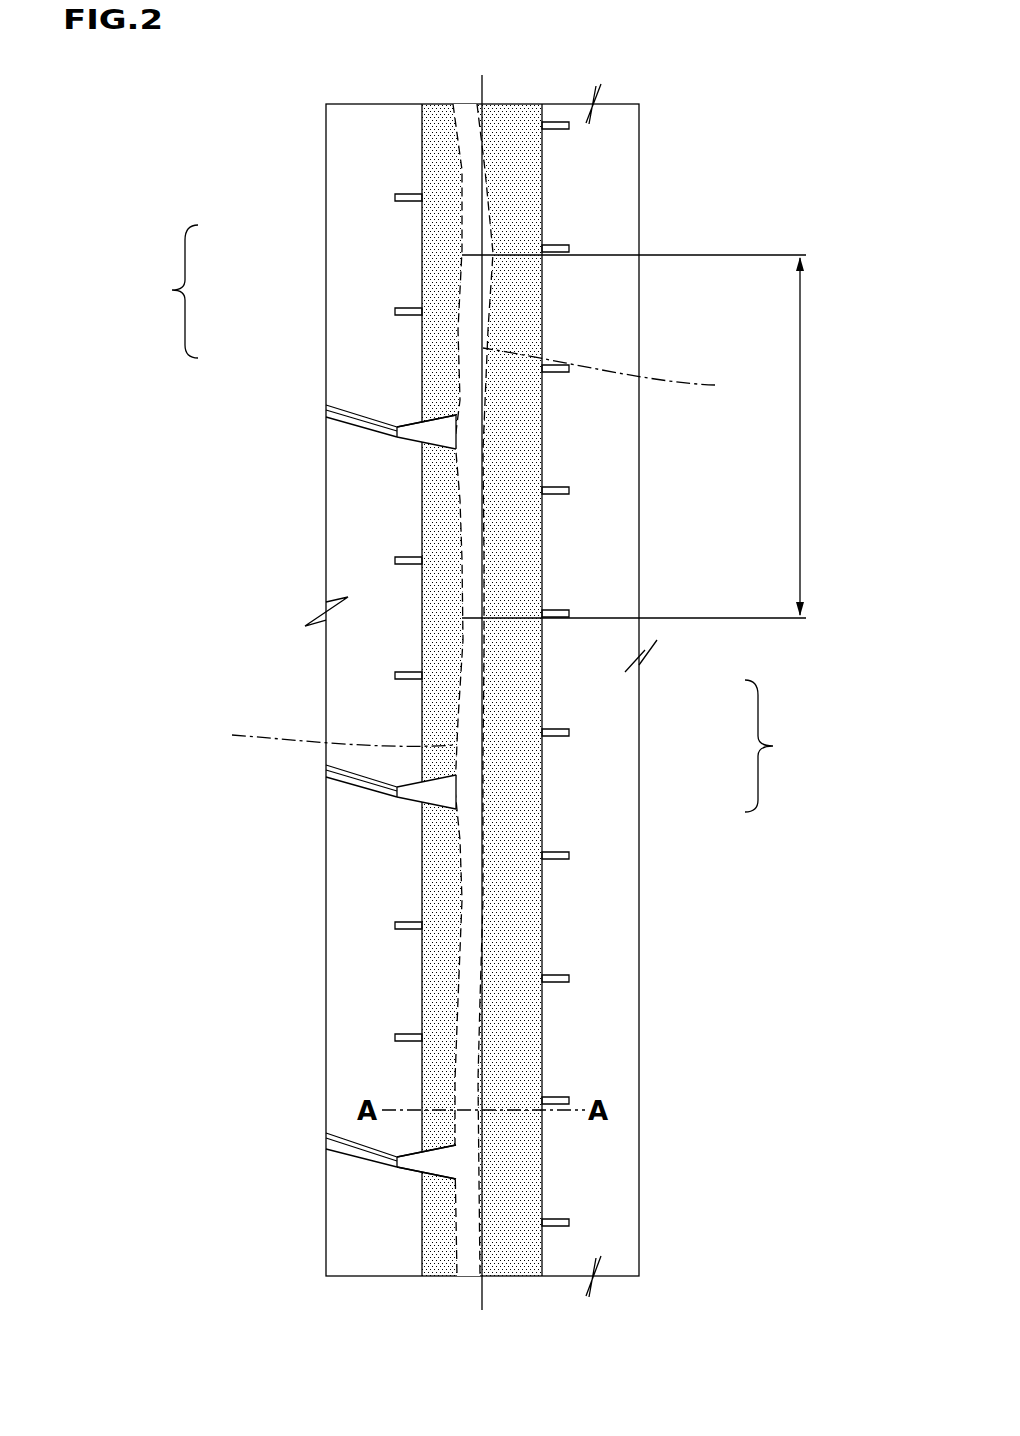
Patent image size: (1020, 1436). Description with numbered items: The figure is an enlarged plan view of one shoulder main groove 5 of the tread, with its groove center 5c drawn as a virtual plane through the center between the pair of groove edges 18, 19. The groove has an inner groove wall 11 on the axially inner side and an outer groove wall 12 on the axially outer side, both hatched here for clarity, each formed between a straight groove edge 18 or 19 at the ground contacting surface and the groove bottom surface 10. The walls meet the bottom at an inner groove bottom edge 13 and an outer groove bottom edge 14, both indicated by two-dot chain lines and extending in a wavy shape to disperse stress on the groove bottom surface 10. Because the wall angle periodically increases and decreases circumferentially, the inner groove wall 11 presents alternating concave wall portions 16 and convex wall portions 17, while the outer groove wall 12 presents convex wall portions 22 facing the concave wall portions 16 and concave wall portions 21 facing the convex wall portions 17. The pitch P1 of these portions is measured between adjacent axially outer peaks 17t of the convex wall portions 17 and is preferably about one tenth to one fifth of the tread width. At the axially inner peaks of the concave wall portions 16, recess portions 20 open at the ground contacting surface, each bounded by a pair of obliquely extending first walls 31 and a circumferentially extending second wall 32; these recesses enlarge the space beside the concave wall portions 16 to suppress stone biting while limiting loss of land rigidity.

The shoulder main groove 5 is at (444, 178).
The groove center 5c is at (484, 92).
The groove bottom surface 10 is at (467, 1083).
The inner groove wall 11 is at (166, 291).
The outer groove wall 12 is at (779, 746).
The inner groove bottom edge 13 is at (324, 735).
The outer groove bottom edge 14 is at (616, 374).
The concave wall portion 16 is at (438, 439).
The convex wall portion 17 is at (462, 248).
The axially outer peak 17t is at (463, 256).
The groove edge 18 is at (422, 1003).
The groove edge 19 is at (542, 1167).
The recess portion 20 is at (398, 439).
The concave wall portion 21 is at (488, 621).
The convex wall portion 22 is at (459, 441).
The first wall 31 is at (408, 1184).
The second wall 32 is at (406, 1182).
The pitch P1 is at (799, 436).